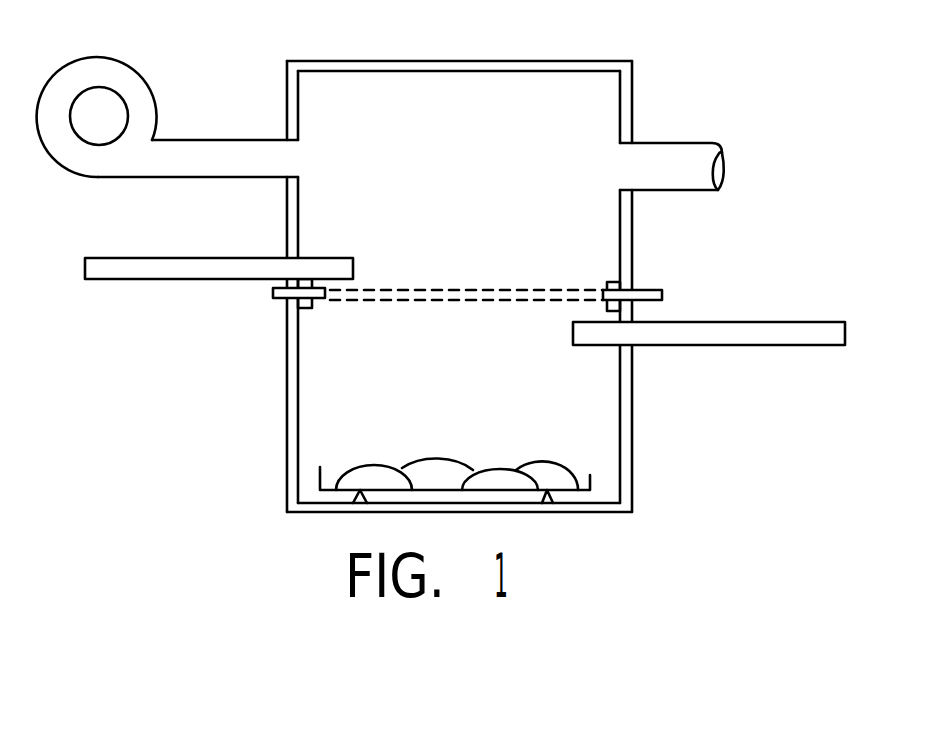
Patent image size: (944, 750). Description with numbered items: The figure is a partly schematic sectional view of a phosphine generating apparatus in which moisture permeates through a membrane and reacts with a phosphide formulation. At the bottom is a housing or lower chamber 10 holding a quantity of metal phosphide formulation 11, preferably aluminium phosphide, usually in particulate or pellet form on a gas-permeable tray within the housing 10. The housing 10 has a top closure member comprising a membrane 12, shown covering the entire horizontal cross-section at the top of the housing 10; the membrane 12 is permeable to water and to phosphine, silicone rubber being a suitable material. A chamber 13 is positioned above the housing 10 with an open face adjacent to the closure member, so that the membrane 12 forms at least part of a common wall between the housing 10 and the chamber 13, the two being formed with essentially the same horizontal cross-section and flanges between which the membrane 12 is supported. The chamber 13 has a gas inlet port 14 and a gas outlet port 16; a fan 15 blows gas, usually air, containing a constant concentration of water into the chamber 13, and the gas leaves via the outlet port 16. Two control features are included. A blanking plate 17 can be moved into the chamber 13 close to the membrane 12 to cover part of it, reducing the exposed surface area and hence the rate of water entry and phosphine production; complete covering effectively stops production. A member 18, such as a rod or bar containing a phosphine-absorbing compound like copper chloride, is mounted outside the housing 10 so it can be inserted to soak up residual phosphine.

The housing 10 is at (287, 402).
The metal phosphide formulation 11 is at (553, 477).
The membrane 12 is at (560, 292).
The chamber 13 is at (583, 120).
The gas inlet port 14 is at (290, 157).
The fan 15 is at (120, 85).
The gas outlet port 16 is at (675, 162).
The blanking plate 17 is at (218, 270).
The member 18 is at (748, 335).